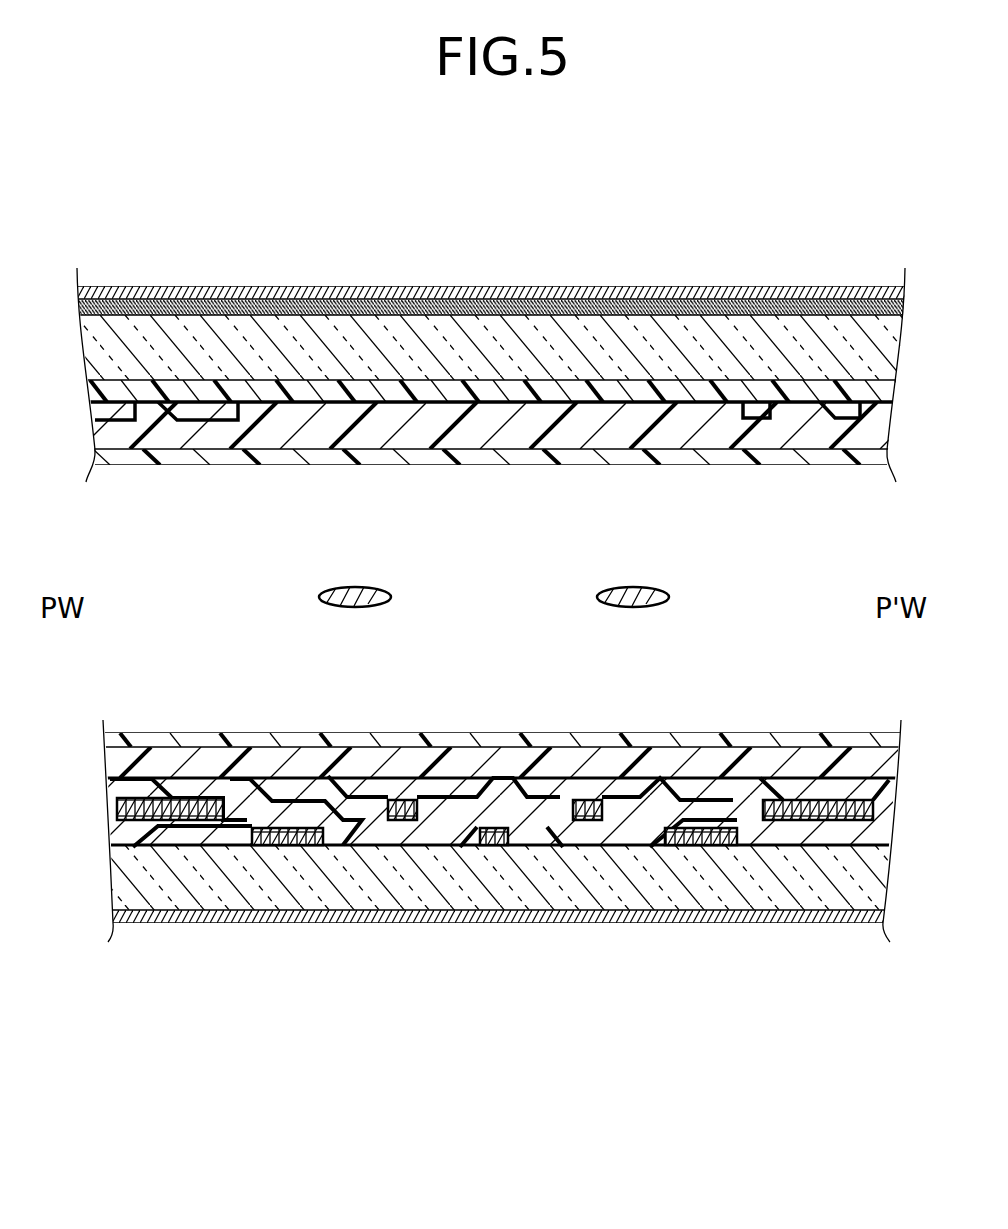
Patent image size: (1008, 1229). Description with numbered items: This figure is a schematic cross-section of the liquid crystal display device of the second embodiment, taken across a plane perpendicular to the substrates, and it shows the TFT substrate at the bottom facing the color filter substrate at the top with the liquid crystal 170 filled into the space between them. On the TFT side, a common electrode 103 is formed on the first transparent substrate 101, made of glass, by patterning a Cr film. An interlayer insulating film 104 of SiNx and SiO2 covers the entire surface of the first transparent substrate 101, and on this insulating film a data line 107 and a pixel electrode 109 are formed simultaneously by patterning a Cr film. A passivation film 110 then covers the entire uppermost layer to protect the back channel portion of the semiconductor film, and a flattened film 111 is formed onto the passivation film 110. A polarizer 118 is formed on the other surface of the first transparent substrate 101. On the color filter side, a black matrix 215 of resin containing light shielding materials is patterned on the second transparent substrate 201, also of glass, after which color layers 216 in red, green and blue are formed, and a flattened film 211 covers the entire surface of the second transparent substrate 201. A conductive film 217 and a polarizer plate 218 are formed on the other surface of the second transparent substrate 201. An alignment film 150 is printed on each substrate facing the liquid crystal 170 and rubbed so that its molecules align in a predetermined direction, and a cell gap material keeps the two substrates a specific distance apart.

The second transparent substrate 201 is at (145, 320).
The conductive film 217 is at (226, 300).
The polarizer plate 218 is at (415, 288).
The flattened film 211 is at (640, 415).
The black matrix 215 is at (830, 390).
The color layers 216 is at (767, 412).
The alignment film 150 is at (183, 462).
The liquid crystal 170 is at (672, 595).
The first transparent substrate 101 is at (185, 895).
The flattened film 111 is at (242, 773).
The passivation film 110 is at (303, 795).
The polarizer 118 is at (358, 925).
The pixel electrode 109 is at (415, 820).
The common electrode 103 is at (493, 847).
The interlayer insulating film 104 is at (613, 845).
The data line 107 is at (835, 820).